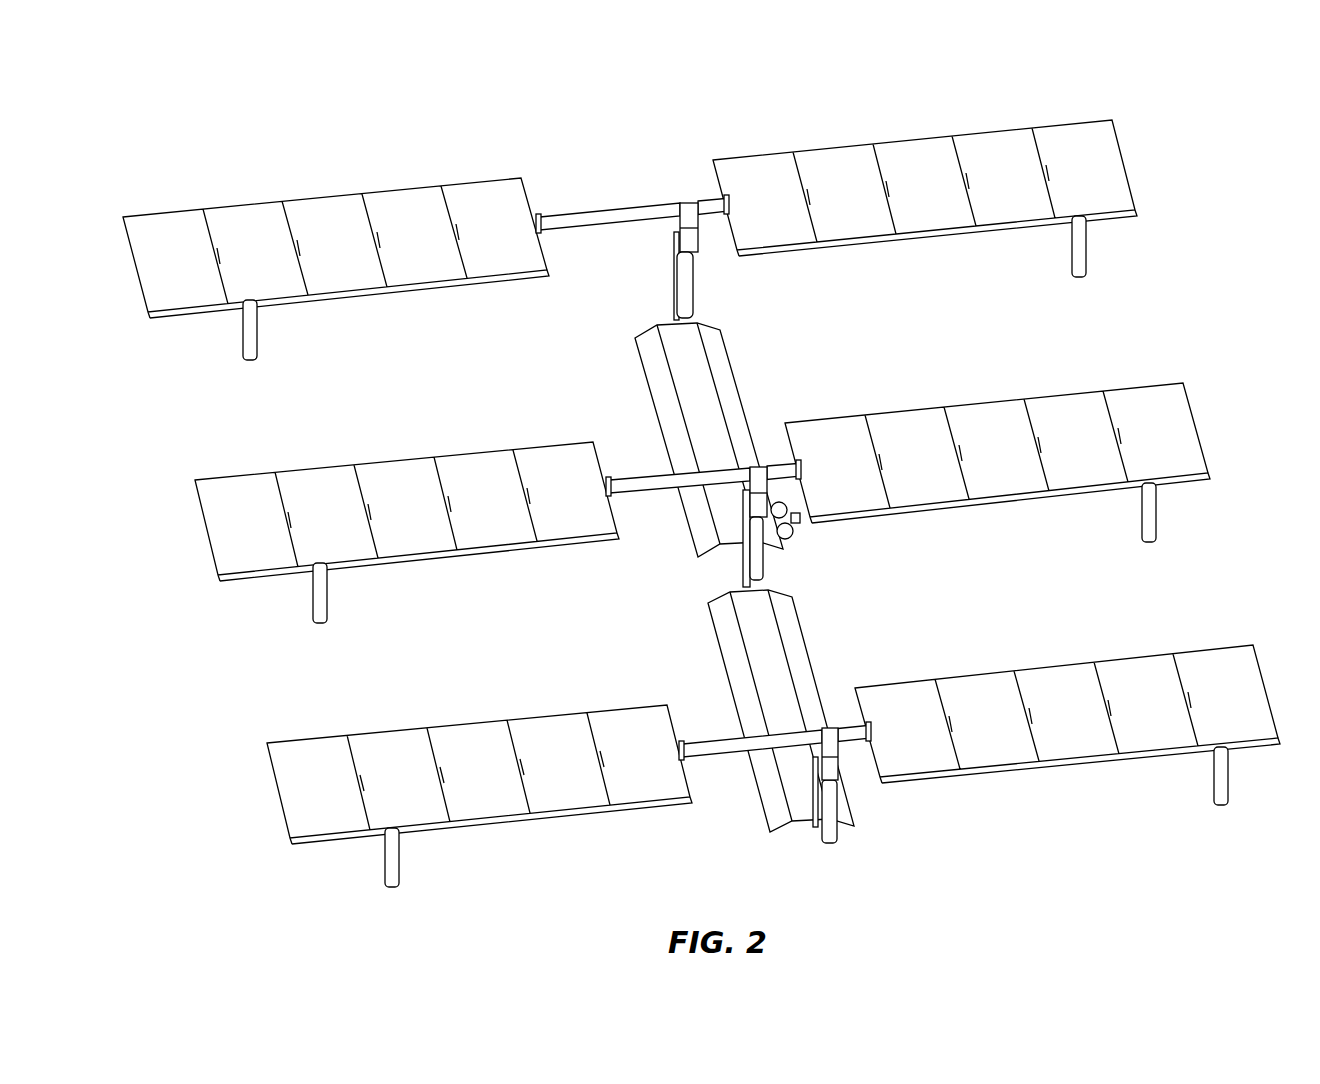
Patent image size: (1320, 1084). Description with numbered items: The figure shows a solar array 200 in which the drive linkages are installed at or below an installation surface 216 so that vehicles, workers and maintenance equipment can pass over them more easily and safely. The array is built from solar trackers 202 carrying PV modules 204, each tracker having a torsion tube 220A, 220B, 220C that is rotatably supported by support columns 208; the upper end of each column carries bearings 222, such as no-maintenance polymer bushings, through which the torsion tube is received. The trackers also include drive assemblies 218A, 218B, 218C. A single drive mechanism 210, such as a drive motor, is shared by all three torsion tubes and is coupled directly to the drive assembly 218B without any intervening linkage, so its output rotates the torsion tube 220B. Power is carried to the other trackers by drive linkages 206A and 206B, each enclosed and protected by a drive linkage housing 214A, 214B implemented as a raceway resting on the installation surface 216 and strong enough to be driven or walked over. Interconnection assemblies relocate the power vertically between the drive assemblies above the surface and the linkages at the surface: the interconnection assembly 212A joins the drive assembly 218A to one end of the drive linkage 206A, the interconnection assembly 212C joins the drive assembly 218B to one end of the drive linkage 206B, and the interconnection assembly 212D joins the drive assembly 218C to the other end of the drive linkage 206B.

The solar array 200 is at (193, 88).
The solar trackers 202 is at (716, 252).
The PV modules 204 is at (355, 256).
The drive linkage 206A is at (658, 320).
The drive linkage 206B is at (771, 583).
The support columns 208 is at (1087, 260).
The drive mechanism 210 is at (792, 525).
The interconnection assembly 212A is at (662, 262).
The interconnection assembly 212C is at (766, 545).
The interconnection assembly 212D is at (811, 797).
The drive linkage housing 214A is at (655, 376).
The drive linkage housing 214B is at (798, 670).
The installation surface 216 is at (425, 641).
The drive assembly 218A is at (676, 232).
The drive assembly 218B is at (745, 495).
The drive assembly 218C is at (830, 770).
The torsion tube 220A is at (552, 225).
The torsion tube 220B is at (624, 482).
The torsion tube 220C is at (705, 745).
The bearings 222 is at (687, 203).